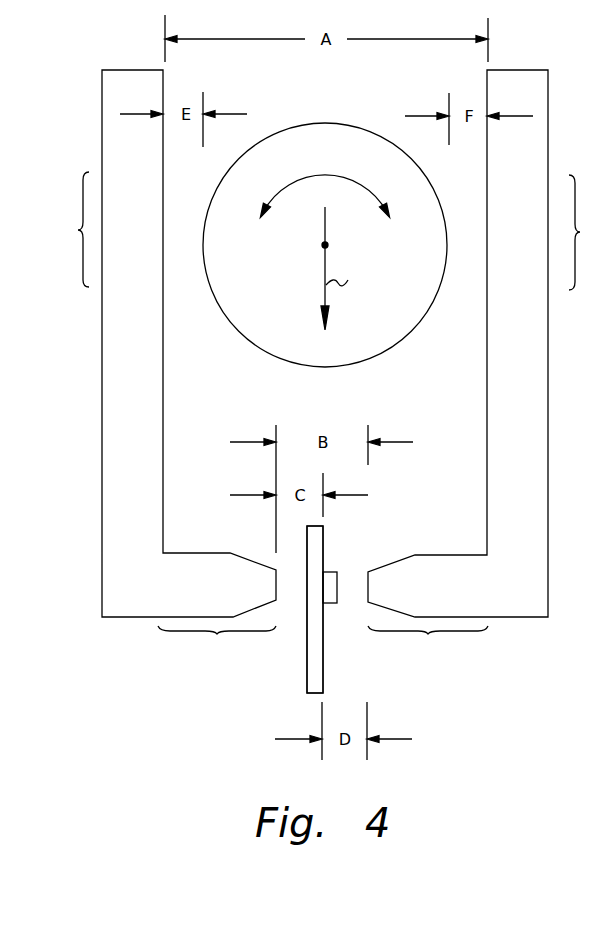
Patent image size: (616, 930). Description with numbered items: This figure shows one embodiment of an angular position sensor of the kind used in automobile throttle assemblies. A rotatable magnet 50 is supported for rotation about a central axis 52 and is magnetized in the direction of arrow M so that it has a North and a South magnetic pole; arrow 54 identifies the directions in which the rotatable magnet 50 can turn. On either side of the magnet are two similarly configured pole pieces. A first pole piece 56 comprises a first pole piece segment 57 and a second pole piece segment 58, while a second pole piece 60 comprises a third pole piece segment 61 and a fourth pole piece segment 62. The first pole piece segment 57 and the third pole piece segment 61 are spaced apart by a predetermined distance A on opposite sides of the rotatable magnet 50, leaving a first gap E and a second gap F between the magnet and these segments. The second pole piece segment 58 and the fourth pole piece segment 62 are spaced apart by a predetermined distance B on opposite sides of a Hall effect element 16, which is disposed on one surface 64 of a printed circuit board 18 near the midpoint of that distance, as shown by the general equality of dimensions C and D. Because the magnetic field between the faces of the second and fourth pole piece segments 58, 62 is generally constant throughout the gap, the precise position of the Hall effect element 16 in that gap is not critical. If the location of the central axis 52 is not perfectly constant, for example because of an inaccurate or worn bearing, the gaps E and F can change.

The Hall effect element 16 is at (333, 567).
The printed circuit board 18 is at (313, 678).
The rotatable magnet 50 is at (330, 123).
The central axis 52 is at (327, 240).
The arrow 54 is at (338, 178).
The first pole piece 56 is at (101, 405).
The first pole piece segment 57 is at (69, 229).
The second pole piece segment 58 is at (217, 644).
The second pole piece 60 is at (548, 405).
The third pole piece segment 61 is at (588, 232).
The fourth pole piece segment 62 is at (428, 644).
The surface 64 is at (323, 648).